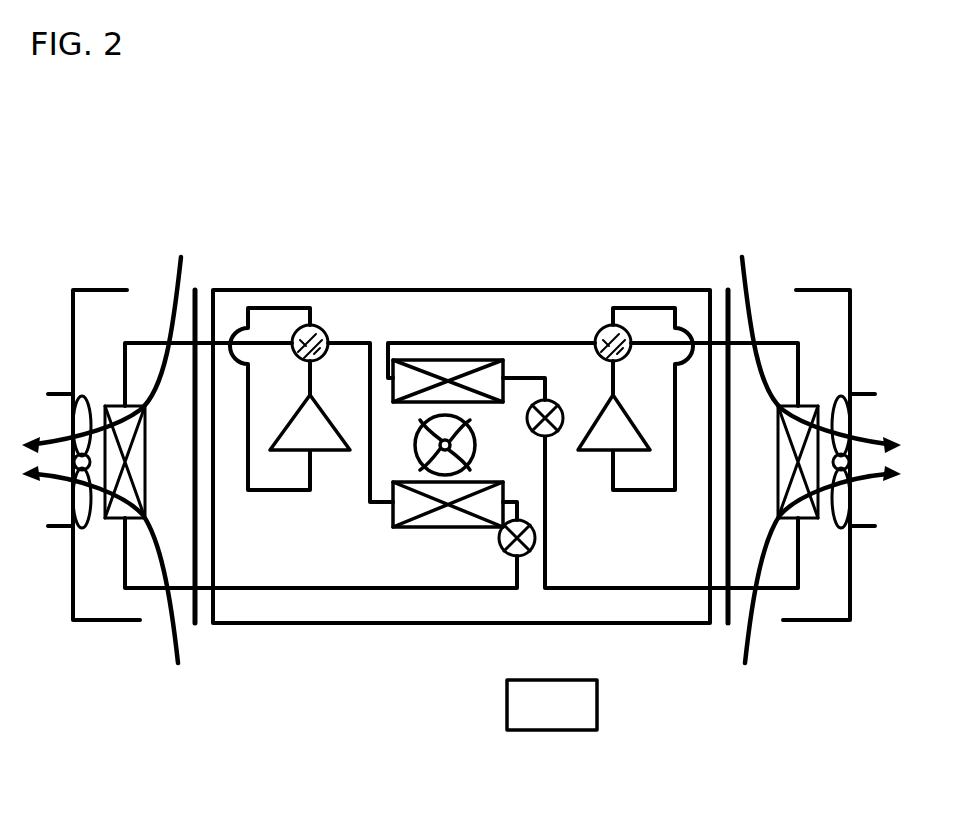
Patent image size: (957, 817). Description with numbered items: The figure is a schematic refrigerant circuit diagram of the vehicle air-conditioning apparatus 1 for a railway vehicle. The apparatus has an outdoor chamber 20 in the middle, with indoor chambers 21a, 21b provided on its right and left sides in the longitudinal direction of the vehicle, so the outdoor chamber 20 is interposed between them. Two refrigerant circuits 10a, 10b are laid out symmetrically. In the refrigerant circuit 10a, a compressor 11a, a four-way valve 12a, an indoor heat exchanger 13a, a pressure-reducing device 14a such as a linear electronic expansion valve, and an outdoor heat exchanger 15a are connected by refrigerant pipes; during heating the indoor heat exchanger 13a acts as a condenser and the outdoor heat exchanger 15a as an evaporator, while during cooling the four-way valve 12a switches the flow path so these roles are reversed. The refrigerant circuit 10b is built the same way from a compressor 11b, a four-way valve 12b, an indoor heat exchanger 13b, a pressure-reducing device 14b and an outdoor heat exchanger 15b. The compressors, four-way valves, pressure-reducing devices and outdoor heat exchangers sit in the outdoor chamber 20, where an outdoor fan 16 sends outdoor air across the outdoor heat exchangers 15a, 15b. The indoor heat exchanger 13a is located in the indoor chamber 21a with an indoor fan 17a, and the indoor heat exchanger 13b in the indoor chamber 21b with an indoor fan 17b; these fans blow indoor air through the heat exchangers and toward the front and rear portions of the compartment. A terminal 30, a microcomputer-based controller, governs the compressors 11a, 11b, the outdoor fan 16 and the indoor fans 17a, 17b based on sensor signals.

The vehicle air-conditioning apparatus 1 is at (655, 197).
The outdoor chamber 20 is at (413, 290).
The refrigerant circuit 10a is at (530, 343).
The refrigerant circuit 10b is at (397, 590).
The compressor 11a is at (597, 452).
The compressor 11b is at (330, 452).
The four-way valve 12a is at (610, 325).
The four-way valve 12b is at (330, 325).
The indoor heat exchanger 13a is at (802, 405).
The indoor heat exchanger 13b is at (113, 405).
The pressure-reducing device 14a is at (560, 406).
The pressure-reducing device 14b is at (500, 550).
The outdoor heat exchanger 15a is at (450, 360).
The outdoor heat exchanger 15b is at (427, 528).
The outdoor fan 16 is at (477, 440).
The indoor fan 17a is at (840, 529).
The indoor fan 17b is at (83, 528).
The indoor chamber 21a is at (826, 290).
The indoor chamber 21b is at (90, 288).
The terminal 30 is at (550, 733).